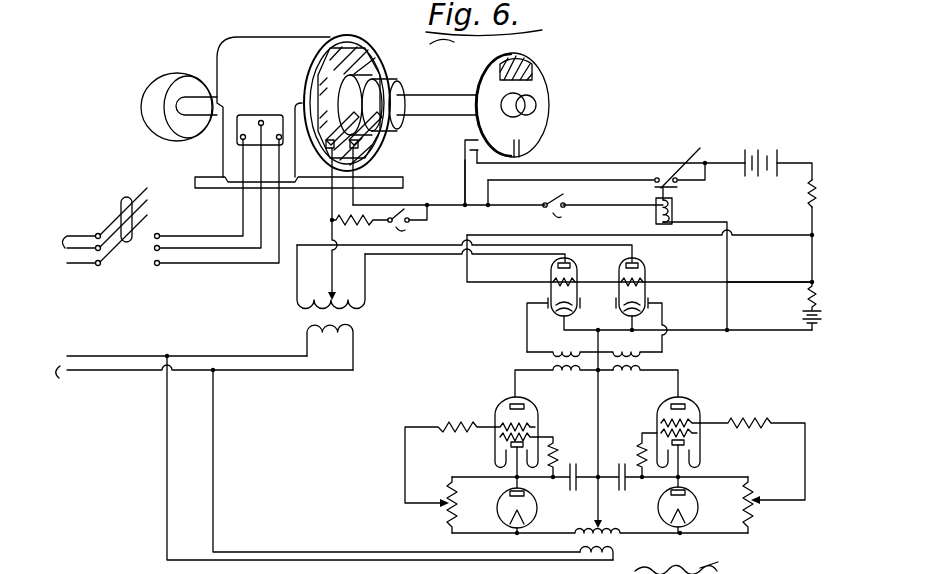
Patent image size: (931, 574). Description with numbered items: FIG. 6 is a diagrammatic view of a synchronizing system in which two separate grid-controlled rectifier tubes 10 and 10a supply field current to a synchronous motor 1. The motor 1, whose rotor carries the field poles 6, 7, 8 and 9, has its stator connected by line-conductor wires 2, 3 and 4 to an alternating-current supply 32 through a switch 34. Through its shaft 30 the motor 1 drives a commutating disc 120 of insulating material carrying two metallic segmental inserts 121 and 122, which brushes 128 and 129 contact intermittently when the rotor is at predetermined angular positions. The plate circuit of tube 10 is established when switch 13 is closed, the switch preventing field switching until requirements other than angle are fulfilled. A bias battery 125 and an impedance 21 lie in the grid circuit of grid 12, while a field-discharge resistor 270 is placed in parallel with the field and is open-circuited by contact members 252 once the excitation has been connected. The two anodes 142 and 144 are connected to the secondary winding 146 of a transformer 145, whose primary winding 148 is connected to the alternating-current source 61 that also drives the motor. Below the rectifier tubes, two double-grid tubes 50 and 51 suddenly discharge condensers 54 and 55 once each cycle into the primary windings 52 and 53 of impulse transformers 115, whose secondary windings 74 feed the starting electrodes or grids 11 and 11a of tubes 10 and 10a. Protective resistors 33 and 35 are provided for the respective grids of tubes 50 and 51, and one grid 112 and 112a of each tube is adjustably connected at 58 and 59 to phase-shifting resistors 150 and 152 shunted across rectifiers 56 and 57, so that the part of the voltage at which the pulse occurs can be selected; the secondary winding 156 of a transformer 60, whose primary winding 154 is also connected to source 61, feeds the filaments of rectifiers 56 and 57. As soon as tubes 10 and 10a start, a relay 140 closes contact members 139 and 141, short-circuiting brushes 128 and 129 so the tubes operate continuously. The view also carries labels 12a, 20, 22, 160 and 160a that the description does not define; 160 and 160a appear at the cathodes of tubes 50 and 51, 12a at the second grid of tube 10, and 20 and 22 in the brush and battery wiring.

The synchronous motor 1 is at (268, 44).
The line-conductor wire 2 is at (170, 235).
The line-conductor wire 3 is at (200, 247).
The line-conductor wire 4 is at (207, 265).
The field pole 6 is at (372, 70).
The field pole 7 is at (380, 141).
The field pole 8 is at (328, 143).
The field pole 9 is at (333, 75).
The grid-controlled rectifier tube 10 is at (578, 284).
The grid-controlled rectifier tube 10a is at (613, 283).
The grid 11 is at (650, 299).
The grid 11a is at (531, 340).
The grid 12 is at (645, 287).
The grid of tube 10 12a is at (551, 283).
The switch 13 is at (566, 210).
The resistor 20 is at (805, 198).
The impedance 21 is at (543, 163).
The conductor 22 is at (464, 168).
The shaft 30 is at (436, 100).
The alternating-current supply of power 32 is at (101, 227).
The protective resistor 33 is at (766, 418).
The switch 34 is at (124, 196).
The protective resistor 35 is at (450, 426).
The double-grid tube 50 is at (693, 399).
The double-grid tube 51 is at (500, 408).
The primary winding 52 is at (630, 376).
The primary winding 53 is at (560, 376).
The condenser 54 is at (620, 461).
The condenser 55 is at (558, 452).
The rectifier 56 is at (658, 505).
The rectifier 57 is at (537, 507).
The adjustable connection 58 is at (753, 509).
The adjustable connection 59 is at (447, 506).
The transformer 60 is at (579, 550).
The source of alternating-current supply 61 is at (204, 376).
The secondary winding 74 is at (594, 346).
The grid 112 is at (688, 424).
The grid 112a is at (526, 426).
The impulse transformer 115 is at (548, 366).
The commutating disc 120 is at (549, 83).
The segmental insert 121 is at (516, 54).
The segmental insert 122 is at (521, 143).
The bias battery 125 is at (803, 317).
The brush 128 is at (478, 139).
The brush 129 is at (478, 151).
The contact member 139 is at (655, 176).
The relay 140 is at (688, 126).
The contact member 141 is at (678, 176).
The anode 142 is at (650, 262).
The anode 144 is at (570, 266).
The transformer 145 is at (355, 318).
The secondary winding 146 is at (297, 298).
The primary winding 148 is at (350, 342).
The phase-shifting resistor 150 is at (753, 525).
The phase-shifting resistor 152 is at (445, 518).
The primary winding 154 is at (618, 553).
The secondary winding 156 is at (606, 529).
The cathode 160 is at (685, 444).
The cathode 160a is at (510, 445).
The contact members 252 is at (420, 226).
The field-discharge resistor 270 is at (360, 229).